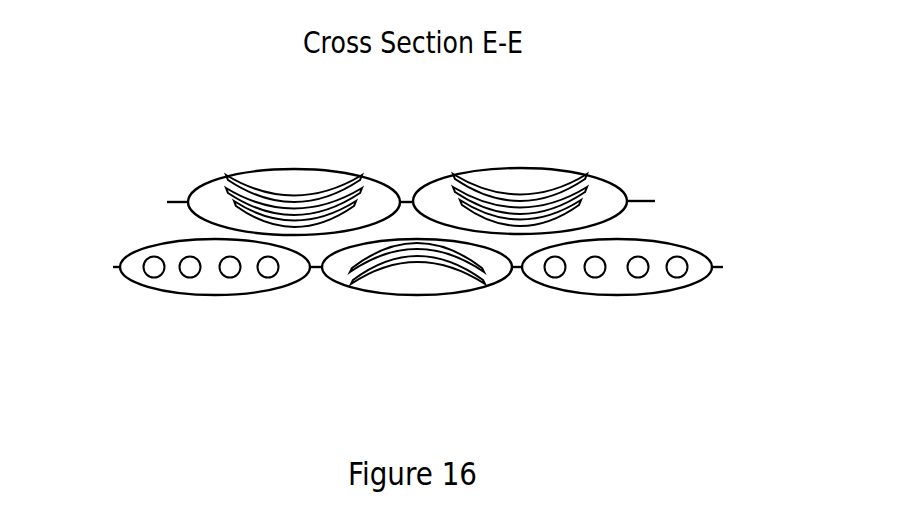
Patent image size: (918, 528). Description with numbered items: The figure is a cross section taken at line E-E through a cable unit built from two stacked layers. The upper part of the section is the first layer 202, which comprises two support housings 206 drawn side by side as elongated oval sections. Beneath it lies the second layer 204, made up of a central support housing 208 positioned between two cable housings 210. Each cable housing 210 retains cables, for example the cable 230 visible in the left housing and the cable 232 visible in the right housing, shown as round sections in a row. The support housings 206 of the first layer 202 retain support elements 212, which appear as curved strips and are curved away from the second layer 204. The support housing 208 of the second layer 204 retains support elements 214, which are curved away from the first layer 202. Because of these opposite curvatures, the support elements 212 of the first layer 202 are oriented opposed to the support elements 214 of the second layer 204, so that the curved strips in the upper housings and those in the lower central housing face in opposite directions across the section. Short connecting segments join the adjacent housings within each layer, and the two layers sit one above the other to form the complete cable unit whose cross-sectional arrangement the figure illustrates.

The first layer 202 is at (170, 200).
The second layer 204 is at (118, 268).
The support housings 206 is at (260, 170).
The support housing 208 is at (403, 296).
The cable housings 210 is at (210, 296).
The support elements 212 is at (335, 179).
The support elements 214 is at (354, 282).
The cable 230 is at (152, 264).
The cable 232 is at (680, 262).